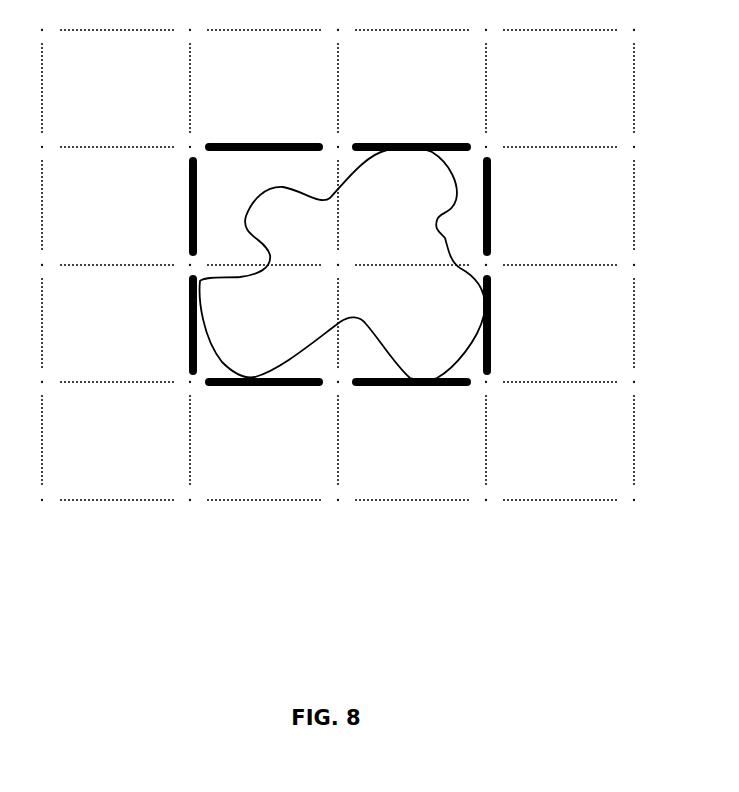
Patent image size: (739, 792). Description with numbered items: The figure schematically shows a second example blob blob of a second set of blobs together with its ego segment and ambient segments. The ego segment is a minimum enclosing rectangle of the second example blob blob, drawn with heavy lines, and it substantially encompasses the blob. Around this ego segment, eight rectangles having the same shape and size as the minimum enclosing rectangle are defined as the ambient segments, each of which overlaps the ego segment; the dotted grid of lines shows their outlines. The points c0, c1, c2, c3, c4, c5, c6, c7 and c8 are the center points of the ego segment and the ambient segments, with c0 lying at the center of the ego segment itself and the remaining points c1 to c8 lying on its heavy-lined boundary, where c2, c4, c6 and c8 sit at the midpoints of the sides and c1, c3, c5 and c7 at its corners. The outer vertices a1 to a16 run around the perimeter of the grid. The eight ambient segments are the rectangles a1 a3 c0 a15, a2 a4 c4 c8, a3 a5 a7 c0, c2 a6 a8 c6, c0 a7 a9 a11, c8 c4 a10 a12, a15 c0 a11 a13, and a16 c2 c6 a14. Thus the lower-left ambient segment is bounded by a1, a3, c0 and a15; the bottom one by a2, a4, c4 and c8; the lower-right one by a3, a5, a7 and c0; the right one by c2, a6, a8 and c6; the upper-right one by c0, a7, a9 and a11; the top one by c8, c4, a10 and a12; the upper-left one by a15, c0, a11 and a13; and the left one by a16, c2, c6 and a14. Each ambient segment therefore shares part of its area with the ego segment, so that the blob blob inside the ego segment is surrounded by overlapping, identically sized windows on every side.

The grid vertex a1 is at (38, 500).
The grid vertex a2 is at (190, 500).
The grid vertex a3 is at (338, 500).
The grid vertex a4 is at (486, 500).
The grid vertex a5 is at (633, 500).
The grid vertex a6 is at (633, 382).
The grid vertex a7 is at (633, 265).
The grid vertex a8 is at (633, 147).
The grid vertex a9 is at (633, 30).
The grid vertex a10 is at (490, 30).
The grid vertex a11 is at (342, 30).
The grid vertex a12 is at (194, 30).
The grid vertex a13 is at (37, 30).
The grid vertex a14 is at (37, 147).
The grid vertex a15 is at (37, 265).
The grid vertex a16 is at (37, 382).
The center point of the ego segment c0 is at (338, 265).
The center point c1 is at (190, 382).
The center point c2 is at (338, 382).
The center point c3 is at (486, 382).
The center point c4 is at (486, 265).
The center point c5 is at (486, 147).
The center point c6 is at (338, 147).
The center point c7 is at (190, 147).
The center point c8 is at (190, 265).
The second example blob is at (296, 361).